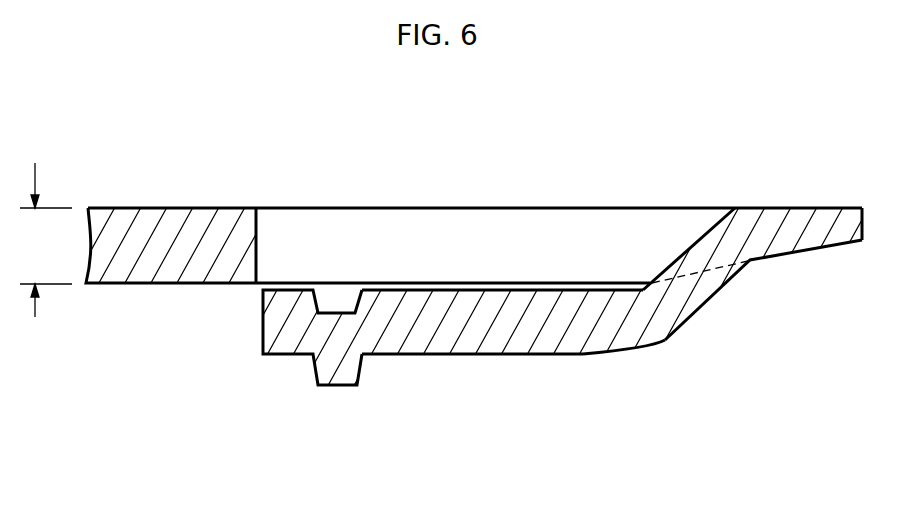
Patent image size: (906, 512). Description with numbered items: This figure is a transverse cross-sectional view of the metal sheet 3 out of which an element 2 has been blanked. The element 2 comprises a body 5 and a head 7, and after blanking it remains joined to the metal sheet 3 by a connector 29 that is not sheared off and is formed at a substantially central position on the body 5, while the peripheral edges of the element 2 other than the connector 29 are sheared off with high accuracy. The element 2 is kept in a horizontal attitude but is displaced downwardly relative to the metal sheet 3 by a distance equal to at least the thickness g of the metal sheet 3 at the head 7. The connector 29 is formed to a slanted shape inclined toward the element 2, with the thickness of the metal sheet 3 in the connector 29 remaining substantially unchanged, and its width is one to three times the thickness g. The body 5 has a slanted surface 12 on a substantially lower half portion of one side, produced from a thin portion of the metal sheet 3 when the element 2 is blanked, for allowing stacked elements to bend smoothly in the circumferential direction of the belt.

The element 2 is at (537, 366).
The metal sheet 3 is at (166, 207).
The body 5 is at (589, 317).
The head 7 is at (283, 343).
The slanted surface 12 is at (642, 348).
The connector 29 is at (705, 283).
The thickness of the metal sheet g is at (46, 240).